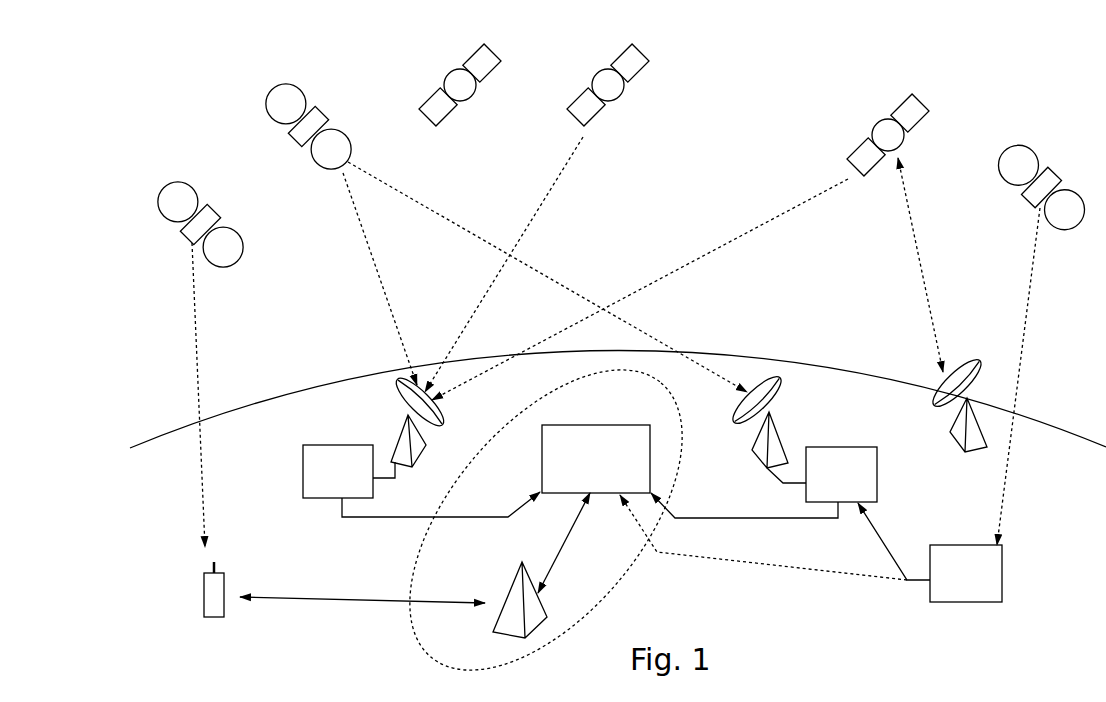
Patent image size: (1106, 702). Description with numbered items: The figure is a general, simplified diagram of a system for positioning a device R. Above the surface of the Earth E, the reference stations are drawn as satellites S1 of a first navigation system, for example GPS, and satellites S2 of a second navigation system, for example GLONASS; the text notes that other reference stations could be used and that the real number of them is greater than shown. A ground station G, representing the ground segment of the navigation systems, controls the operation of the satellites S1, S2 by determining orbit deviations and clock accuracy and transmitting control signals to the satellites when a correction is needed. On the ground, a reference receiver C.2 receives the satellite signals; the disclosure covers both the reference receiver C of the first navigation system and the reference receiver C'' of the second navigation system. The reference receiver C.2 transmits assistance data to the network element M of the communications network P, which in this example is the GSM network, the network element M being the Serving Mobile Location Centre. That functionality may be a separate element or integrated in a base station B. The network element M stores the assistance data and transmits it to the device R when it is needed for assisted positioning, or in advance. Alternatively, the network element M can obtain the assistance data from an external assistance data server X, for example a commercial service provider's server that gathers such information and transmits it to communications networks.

The satellites of a first navigation system S1 is at (173, 183).
The satellites of a second navigation system S2 is at (500, 67).
The Earth E is at (162, 432).
The reference receiver C.2 is at (407, 418).
The reference receiver of the second navigation system C'' is at (298, 471).
The reference receiver of the first navigation system C is at (874, 478).
The ground station G is at (950, 430).
The network element M is at (567, 428).
The assistance data server X is at (1002, 563).
The communications network P is at (635, 563).
The base station B is at (528, 627).
The device R is at (212, 602).